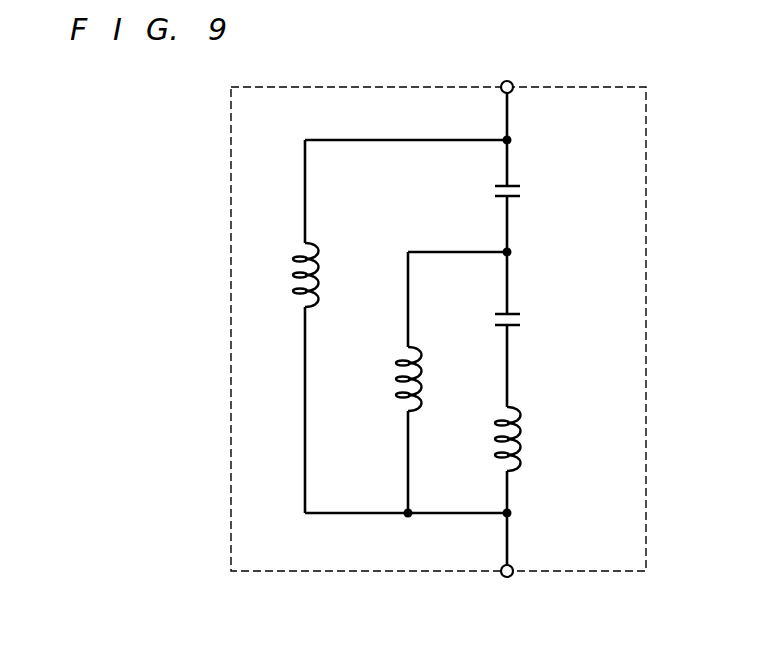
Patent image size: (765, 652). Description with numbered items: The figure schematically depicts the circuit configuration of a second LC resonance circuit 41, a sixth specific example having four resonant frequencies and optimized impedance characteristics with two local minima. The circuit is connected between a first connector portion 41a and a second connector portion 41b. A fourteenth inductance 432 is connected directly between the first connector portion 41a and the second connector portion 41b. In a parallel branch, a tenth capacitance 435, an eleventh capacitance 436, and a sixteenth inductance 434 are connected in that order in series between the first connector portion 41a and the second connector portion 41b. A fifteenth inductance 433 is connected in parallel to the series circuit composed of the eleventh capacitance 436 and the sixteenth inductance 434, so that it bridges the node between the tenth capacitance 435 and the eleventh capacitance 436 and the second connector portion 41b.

The second LC resonance circuit 41 is at (588, 86).
The first connector portion 41a is at (507, 80).
The second connector portion 41b is at (507, 578).
The fourteenth inductance 432 is at (302, 262).
The fifteenth inductance 433 is at (405, 365).
The sixteenth inductance 434 is at (521, 420).
The tenth capacitance 435 is at (522, 193).
The eleventh capacitance 436 is at (522, 321).